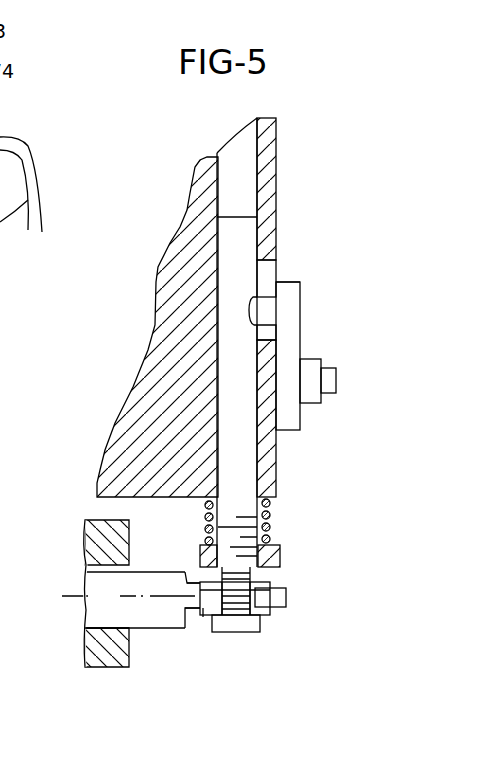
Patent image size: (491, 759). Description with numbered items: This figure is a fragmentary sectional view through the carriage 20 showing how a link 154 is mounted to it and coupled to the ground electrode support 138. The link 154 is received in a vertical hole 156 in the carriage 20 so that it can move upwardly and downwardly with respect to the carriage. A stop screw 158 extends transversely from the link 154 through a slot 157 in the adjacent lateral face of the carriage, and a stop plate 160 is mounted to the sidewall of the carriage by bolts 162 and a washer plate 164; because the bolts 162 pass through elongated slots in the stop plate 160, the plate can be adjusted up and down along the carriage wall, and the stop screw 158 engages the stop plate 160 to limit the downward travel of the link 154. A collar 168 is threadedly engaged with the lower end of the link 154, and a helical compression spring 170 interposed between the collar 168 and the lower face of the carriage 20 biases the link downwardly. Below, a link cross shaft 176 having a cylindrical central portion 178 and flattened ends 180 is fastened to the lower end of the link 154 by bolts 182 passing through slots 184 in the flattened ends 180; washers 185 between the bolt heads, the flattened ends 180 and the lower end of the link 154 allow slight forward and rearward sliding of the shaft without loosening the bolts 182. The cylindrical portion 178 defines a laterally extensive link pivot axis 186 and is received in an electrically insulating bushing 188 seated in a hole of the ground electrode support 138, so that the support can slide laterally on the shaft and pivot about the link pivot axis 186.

The carriage 20 is at (289, 196).
The link 154 is at (247, 462).
The vertical hole 156 is at (245, 152).
The slot 157 is at (274, 277).
The stop screw 158 is at (293, 293).
The stop plate 160 is at (292, 414).
The bolts 162 is at (337, 375).
The washer plate 164 is at (306, 367).
The collar 168 is at (272, 567).
The helical compression spring 170 is at (272, 517).
The link cross shaft 176 is at (148, 640).
The cylindrical central portion 178 is at (167, 622).
The flattened ends 180 is at (287, 597).
The bolts 182 is at (257, 624).
The slots 184 is at (255, 600).
The washers 185 is at (195, 583).
The link pivot axis 186 is at (70, 594).
The electrically insulating bushing 188 is at (85, 630).
The ground electrode support 138 is at (92, 676).